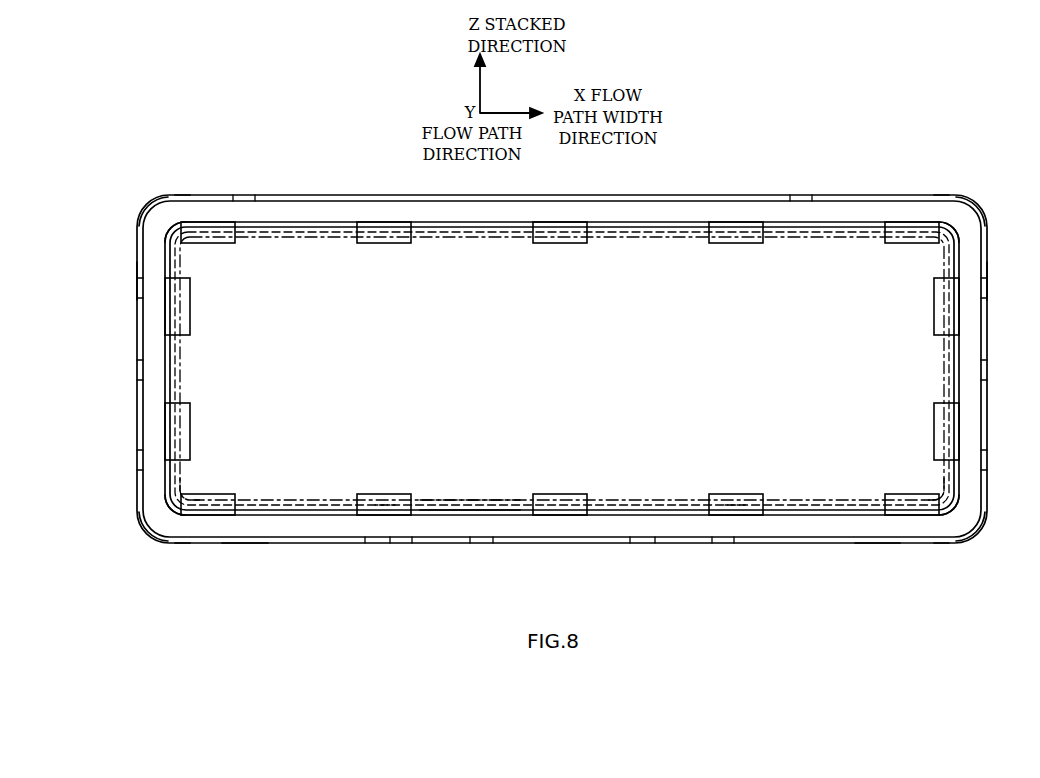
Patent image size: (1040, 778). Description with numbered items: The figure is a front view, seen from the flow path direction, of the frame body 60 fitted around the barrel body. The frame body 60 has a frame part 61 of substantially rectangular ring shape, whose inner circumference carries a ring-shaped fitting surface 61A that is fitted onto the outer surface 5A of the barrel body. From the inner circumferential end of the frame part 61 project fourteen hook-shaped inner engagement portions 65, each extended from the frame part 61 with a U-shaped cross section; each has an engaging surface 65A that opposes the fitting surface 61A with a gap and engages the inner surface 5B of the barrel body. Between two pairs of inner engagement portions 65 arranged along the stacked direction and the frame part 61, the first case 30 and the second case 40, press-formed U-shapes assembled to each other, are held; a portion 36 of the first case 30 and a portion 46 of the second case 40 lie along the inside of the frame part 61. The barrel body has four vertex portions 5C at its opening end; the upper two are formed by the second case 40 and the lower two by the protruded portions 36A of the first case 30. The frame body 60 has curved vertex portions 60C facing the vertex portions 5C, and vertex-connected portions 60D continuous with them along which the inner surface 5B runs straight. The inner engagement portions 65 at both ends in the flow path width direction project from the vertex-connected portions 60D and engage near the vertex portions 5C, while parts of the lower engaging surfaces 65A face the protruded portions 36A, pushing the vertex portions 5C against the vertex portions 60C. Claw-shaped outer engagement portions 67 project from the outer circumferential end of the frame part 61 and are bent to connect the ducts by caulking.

The frame body 60 is at (291, 190).
The vertex portions 60C is at (164, 226).
The vertex-connected portions 60D is at (181, 236).
The outer engagement portions 67 is at (137, 300).
The second case 40 is at (167, 383).
The inner frame plate 46 is at (169, 352).
The first case 30 is at (185, 340).
The separator plate edge 36 is at (187, 380).
The protruded portions 36A is at (182, 486).
The vertex portions 5C is at (163, 228).
The inner surface 5B is at (463, 500).
The outer surface 5A is at (477, 507).
The frame part 61 is at (372, 525).
The fitting surface 61A is at (387, 502).
The inner engagement portions 65 is at (384, 243).
The engaging surfaces 65A is at (735, 505).